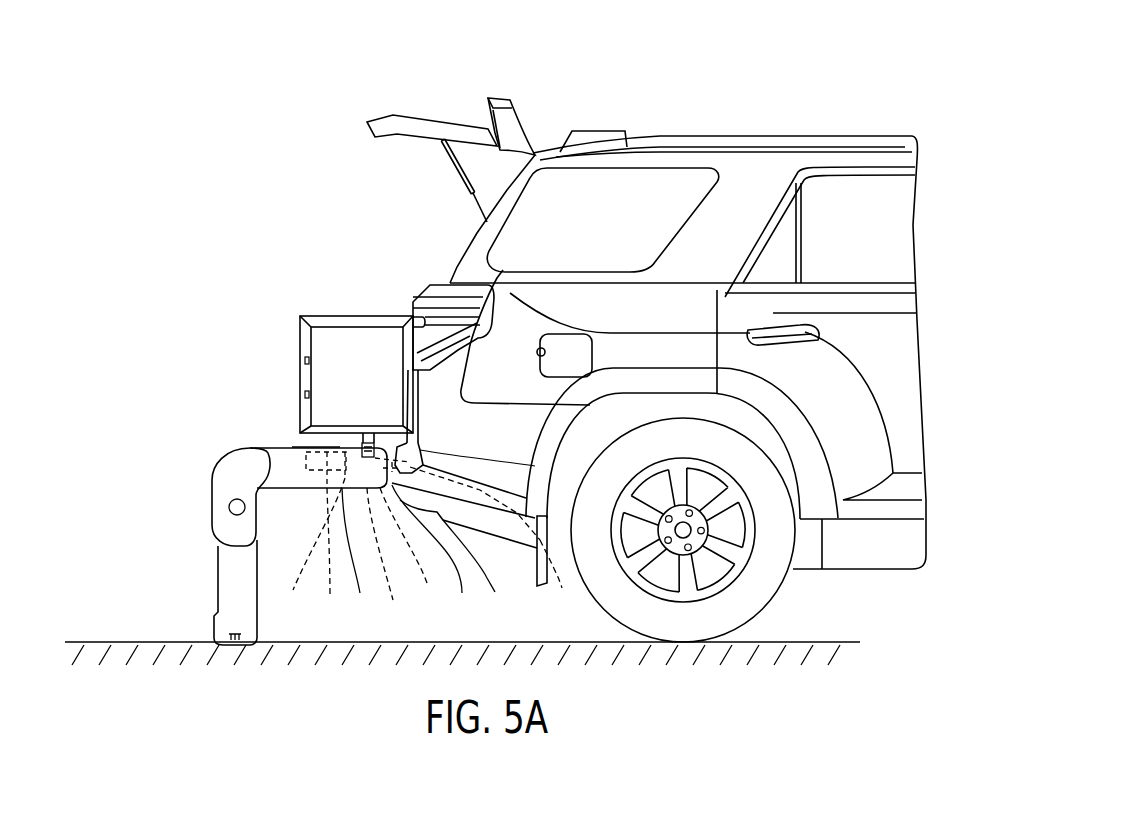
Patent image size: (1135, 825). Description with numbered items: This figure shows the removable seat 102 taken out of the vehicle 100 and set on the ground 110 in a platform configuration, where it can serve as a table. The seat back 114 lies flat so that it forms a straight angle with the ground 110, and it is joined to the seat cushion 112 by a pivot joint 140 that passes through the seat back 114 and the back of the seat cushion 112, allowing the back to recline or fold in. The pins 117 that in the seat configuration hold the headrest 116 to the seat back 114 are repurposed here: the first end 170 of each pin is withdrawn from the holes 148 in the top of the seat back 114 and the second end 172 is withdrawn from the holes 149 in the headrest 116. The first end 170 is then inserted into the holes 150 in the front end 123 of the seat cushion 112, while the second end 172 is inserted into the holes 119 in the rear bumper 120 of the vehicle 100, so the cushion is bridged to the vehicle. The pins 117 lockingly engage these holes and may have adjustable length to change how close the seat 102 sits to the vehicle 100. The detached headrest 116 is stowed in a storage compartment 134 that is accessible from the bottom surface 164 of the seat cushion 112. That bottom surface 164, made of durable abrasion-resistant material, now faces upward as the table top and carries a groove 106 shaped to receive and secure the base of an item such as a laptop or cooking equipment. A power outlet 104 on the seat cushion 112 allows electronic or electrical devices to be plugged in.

The vehicle 100 is at (596, 95).
The removable seat 102 is at (105, 440).
The power outlet 104 is at (335, 447).
The groove 106 is at (293, 448).
The ground 110 is at (282, 642).
The seat cushion 112 is at (279, 480).
The seat back 114 is at (223, 578).
The headrest 116 is at (318, 448).
The pins 117 is at (495, 593).
The holes in the rear bumper 119 is at (503, 507).
The rear bumper 120 is at (462, 595).
The front end of the seat cushion 123 is at (360, 594).
The storage compartment 134 is at (330, 600).
The pivot joint 140 is at (229, 505).
The holes in the top end of the seat back 148 is at (234, 645).
The holes in the headrest 149 is at (294, 592).
The holes in the front end of the seat cushion 150 is at (393, 602).
The bottom surface of the seat cushion 164 is at (368, 443).
The first end of the pins 170 is at (428, 588).
The second end of the pins 172 is at (562, 590).